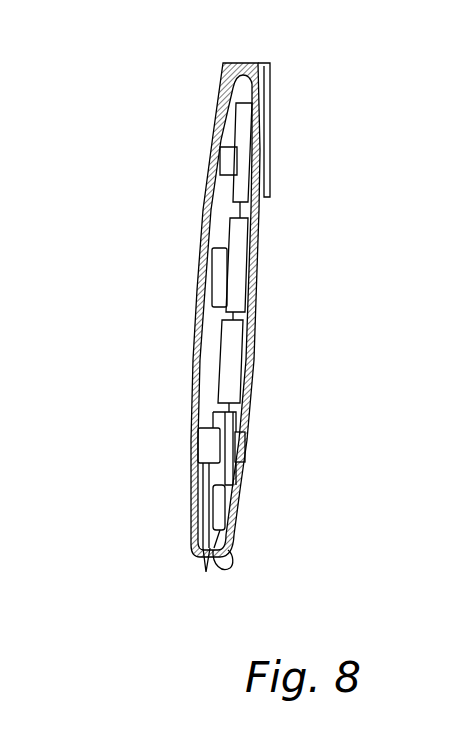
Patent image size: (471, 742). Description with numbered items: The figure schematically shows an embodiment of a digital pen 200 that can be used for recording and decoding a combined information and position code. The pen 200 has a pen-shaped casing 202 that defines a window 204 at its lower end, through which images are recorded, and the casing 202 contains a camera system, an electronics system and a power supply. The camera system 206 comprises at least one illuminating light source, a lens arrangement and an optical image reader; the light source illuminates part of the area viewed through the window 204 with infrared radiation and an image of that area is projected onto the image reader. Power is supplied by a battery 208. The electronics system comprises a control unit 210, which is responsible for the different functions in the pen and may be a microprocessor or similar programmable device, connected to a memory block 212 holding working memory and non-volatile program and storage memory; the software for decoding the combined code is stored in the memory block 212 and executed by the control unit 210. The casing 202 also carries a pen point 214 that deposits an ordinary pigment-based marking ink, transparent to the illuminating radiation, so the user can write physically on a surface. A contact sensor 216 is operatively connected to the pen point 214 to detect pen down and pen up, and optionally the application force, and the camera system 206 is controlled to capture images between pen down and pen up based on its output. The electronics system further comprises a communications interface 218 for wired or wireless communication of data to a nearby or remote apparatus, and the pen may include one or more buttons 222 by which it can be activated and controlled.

The digital pen 200 is at (182, 157).
The casing 202 is at (255, 232).
The window 204 is at (232, 557).
The camera system 206 is at (219, 505).
The battery 208 is at (213, 280).
The control unit 210 is at (237, 362).
The memory block 212 is at (247, 270).
The pen point 214 is at (205, 572).
The contact sensor 216 is at (210, 450).
The communications interface 218 is at (242, 152).
The button 222 is at (242, 443).